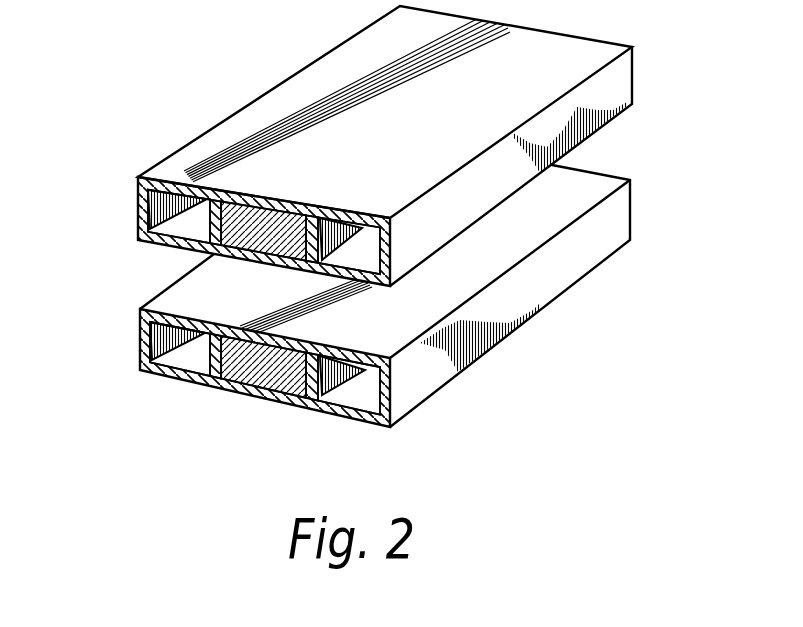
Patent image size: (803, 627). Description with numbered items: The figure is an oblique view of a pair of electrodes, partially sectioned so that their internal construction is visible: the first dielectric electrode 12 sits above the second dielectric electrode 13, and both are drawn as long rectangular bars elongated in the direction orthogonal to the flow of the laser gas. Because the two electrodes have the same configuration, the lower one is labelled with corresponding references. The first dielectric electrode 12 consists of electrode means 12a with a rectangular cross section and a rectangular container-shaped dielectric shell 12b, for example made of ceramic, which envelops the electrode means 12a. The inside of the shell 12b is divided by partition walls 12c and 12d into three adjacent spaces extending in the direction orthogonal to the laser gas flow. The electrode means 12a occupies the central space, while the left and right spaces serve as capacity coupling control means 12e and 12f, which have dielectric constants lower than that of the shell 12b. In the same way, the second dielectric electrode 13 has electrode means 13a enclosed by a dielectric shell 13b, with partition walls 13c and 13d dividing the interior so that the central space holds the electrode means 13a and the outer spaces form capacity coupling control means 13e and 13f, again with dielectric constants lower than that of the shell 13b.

The first dielectric electrode 12 is at (627, 99).
The electrode means 12a is at (283, 222).
The dielectric shell 12b is at (155, 213).
The partition wall 12c is at (190, 200).
The partition wall 12d is at (305, 220).
The capacity coupling control means 12e is at (192, 228).
The capacity coupling control means 12f is at (368, 256).
The second dielectric electrode 13 is at (607, 248).
The electrode means 13a is at (265, 375).
The dielectric shell 13b is at (160, 343).
The partition wall 13c is at (207, 360).
The partition wall 13d is at (304, 390).
The capacity coupling control means 13e is at (180, 355).
The capacity coupling control means 13f is at (367, 397).